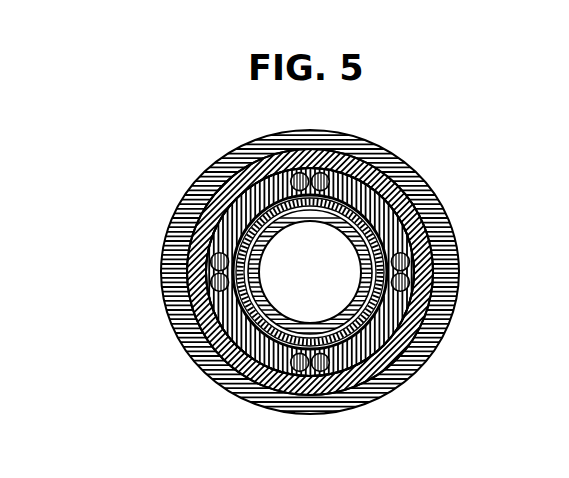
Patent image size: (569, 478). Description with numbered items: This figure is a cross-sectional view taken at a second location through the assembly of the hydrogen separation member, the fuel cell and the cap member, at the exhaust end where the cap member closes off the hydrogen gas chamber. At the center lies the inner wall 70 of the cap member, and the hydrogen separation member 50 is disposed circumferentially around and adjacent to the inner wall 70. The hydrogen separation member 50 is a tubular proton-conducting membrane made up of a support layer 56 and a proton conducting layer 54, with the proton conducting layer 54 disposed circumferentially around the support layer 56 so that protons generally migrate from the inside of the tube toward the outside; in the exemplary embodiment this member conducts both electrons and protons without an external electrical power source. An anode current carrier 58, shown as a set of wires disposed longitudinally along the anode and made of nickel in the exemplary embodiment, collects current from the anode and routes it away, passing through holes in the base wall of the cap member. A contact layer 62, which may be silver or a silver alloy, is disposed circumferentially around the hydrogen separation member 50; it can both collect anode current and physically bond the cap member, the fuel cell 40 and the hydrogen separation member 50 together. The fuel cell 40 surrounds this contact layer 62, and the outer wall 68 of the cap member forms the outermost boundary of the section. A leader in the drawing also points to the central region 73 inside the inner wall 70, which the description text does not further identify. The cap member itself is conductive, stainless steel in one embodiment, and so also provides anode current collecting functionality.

The fuel cell 40 is at (196, 239).
The hydrogen separation member 50 is at (263, 200).
The proton conducting layer 54 is at (265, 367).
The support layer 56 is at (408, 158).
The anode current carrier 58 is at (212, 277).
The contact layer 62 is at (413, 174).
The outer wall 68 is at (443, 205).
The inner wall 70 is at (207, 327).
The central core 73 is at (337, 268).